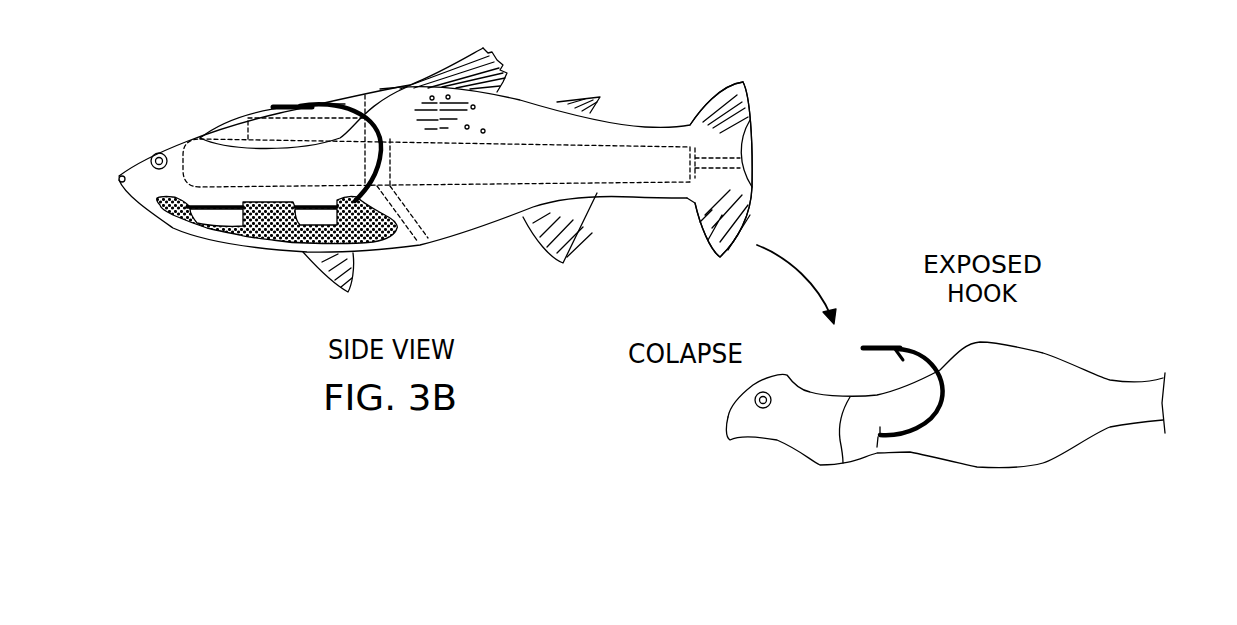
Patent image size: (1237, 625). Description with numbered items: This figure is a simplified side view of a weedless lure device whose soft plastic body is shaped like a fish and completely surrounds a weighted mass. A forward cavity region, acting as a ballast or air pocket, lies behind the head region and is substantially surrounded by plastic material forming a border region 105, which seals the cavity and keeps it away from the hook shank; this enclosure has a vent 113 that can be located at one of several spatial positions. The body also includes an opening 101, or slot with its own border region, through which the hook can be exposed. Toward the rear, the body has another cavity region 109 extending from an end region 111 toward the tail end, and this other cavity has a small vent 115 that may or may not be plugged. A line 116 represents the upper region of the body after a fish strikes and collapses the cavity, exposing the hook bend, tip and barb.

The opening 101 is at (345, 103).
The border region 105 is at (248, 130).
The other cavity region 109 is at (520, 157).
The end region 111 is at (687, 158).
The vent 113 is at (418, 243).
The small vent 115 is at (740, 164).
The line 116 is at (200, 133).